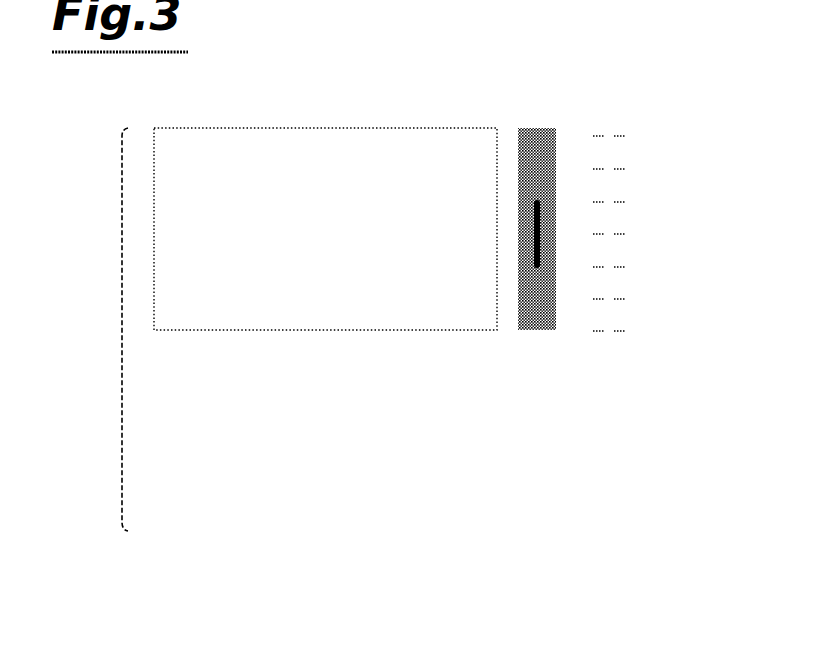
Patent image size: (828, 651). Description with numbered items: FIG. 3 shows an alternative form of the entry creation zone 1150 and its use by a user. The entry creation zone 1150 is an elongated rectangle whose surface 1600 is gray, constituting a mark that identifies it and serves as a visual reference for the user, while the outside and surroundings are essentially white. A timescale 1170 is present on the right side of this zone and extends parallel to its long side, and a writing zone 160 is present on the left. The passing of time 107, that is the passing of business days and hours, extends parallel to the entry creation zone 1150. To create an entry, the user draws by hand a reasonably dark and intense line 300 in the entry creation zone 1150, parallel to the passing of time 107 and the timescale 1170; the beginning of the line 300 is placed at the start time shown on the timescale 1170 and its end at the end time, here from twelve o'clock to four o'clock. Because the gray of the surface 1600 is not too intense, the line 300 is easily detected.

The passing of time 107 is at (123, 334).
The writing zone 160 is at (346, 237).
The entry creation zone 1150 is at (553, 140).
The line 300 is at (538, 243).
The surface 1600 is at (537, 318).
The timescale 1170 is at (615, 216).